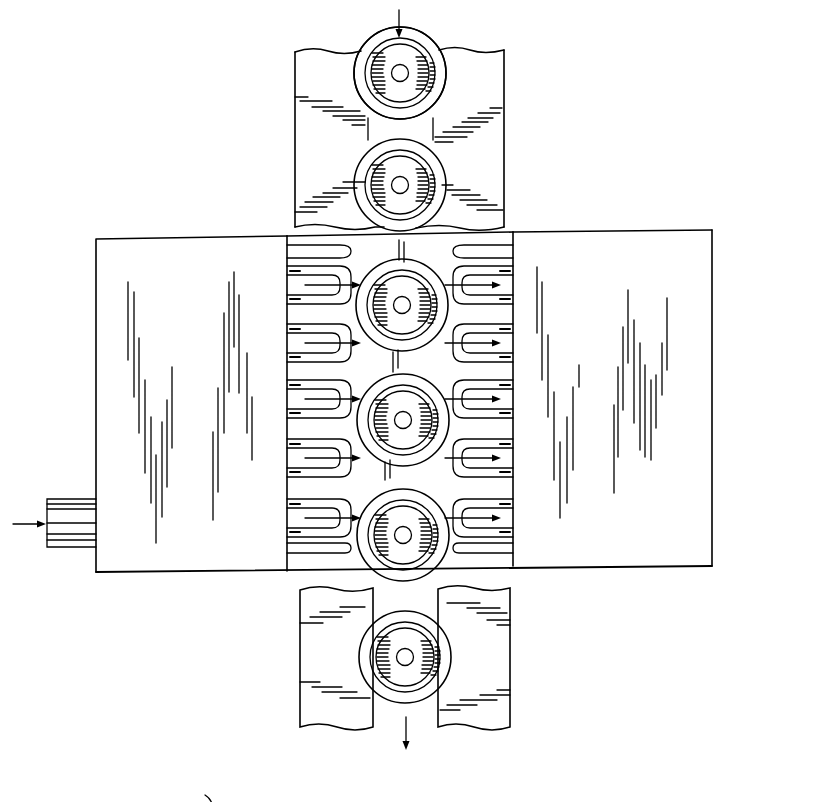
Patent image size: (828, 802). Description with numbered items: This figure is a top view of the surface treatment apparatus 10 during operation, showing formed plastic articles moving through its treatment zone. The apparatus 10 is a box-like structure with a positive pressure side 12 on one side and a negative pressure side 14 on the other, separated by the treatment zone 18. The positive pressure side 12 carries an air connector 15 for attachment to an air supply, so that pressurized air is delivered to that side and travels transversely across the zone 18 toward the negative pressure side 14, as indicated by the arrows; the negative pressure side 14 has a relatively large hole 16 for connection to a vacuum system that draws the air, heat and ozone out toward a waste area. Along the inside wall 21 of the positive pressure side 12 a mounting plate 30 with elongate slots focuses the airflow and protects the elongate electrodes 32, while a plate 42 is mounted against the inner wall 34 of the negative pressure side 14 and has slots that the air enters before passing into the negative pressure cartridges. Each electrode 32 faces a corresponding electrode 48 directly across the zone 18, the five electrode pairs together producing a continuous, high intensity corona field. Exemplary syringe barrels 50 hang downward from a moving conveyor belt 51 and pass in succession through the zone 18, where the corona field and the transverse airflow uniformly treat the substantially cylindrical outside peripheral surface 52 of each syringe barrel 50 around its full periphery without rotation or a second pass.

The apparatus 10 is at (201, 214).
The positive pressure side 12 is at (132, 243).
The negative pressure side 14 is at (641, 233).
The air connector 15 is at (72, 500).
The hole 16 is at (712, 395).
The treatment zone 18 is at (442, 490).
The inside wall 21 is at (292, 236).
The mounting plate 30 is at (293, 543).
The electrode 32 is at (318, 270).
The inner wall 34 is at (510, 233).
The plate 42 is at (508, 566).
The electrode 48 is at (513, 262).
The syringe barrel 50 is at (418, 58).
The conveyor belt 51 is at (492, 137).
The outside peripheral surface 52 is at (367, 71).